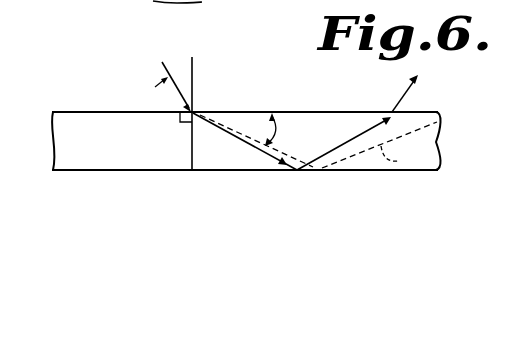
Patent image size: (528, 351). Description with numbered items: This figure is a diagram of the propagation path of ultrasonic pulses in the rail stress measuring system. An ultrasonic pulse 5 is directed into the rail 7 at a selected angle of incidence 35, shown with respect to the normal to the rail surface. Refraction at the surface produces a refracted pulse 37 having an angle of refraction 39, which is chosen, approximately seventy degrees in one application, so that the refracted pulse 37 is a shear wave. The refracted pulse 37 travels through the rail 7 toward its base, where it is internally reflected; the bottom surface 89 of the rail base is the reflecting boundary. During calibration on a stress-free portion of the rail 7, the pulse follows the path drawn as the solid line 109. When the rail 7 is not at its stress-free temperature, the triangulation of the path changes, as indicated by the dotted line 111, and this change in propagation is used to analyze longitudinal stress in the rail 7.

The ultrasonic pulse 5 is at (163, 72).
The rail 7 is at (434, 143).
The angle of incidence 35 is at (198, 72).
The refracted pulse 37 is at (278, 161).
The angle of refraction 39 is at (286, 129).
The bottom surface 89 is at (162, 0).
The solid line path 109 is at (342, 145).
The dotted line path 111 is at (401, 155).